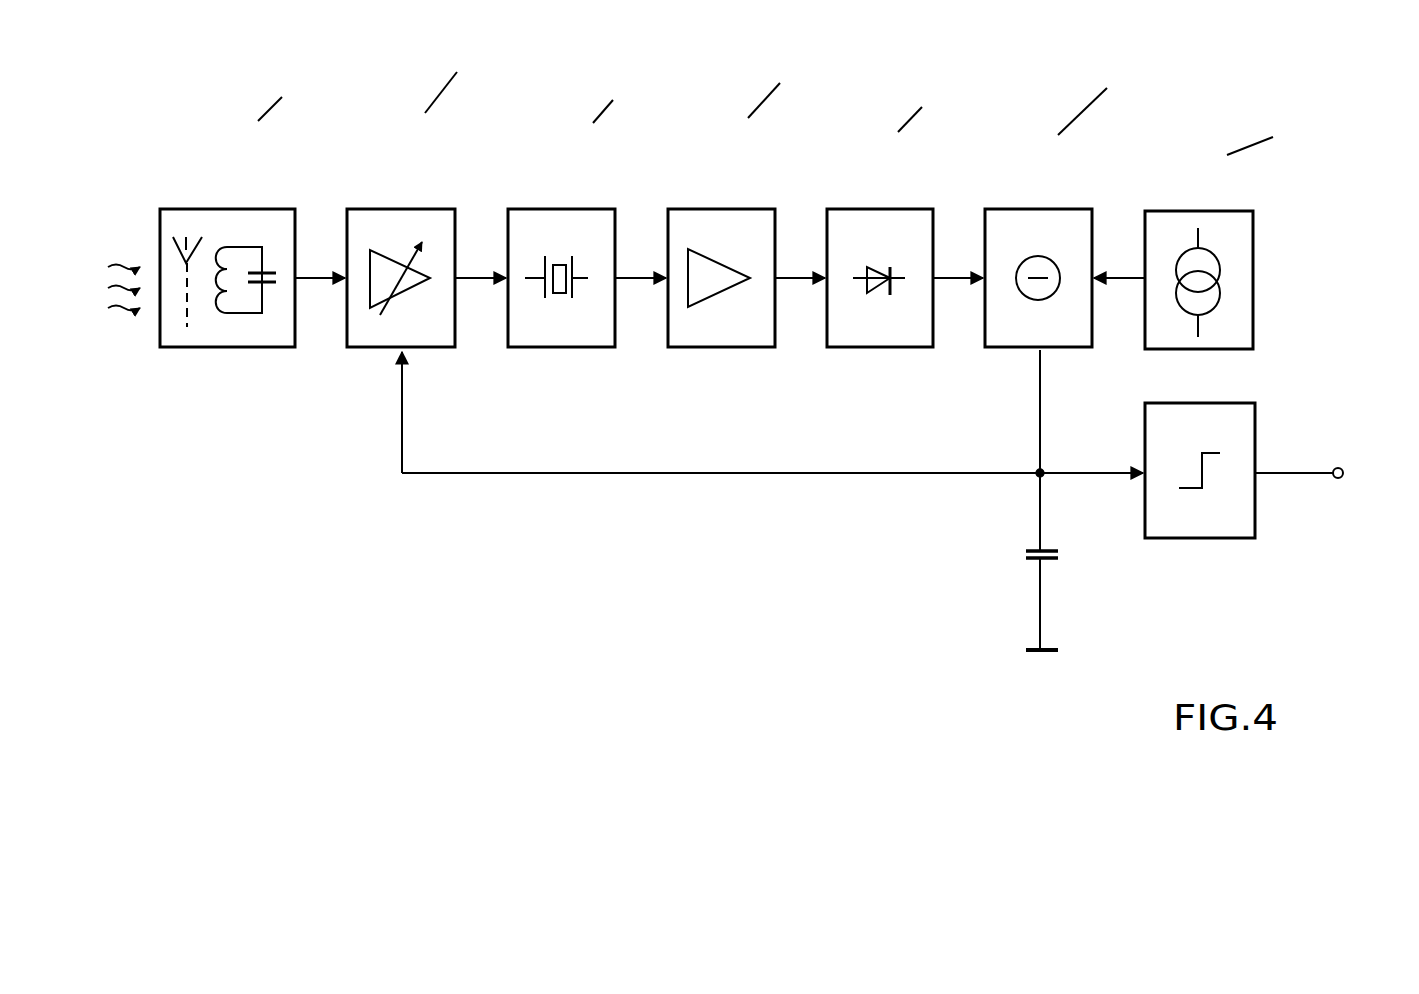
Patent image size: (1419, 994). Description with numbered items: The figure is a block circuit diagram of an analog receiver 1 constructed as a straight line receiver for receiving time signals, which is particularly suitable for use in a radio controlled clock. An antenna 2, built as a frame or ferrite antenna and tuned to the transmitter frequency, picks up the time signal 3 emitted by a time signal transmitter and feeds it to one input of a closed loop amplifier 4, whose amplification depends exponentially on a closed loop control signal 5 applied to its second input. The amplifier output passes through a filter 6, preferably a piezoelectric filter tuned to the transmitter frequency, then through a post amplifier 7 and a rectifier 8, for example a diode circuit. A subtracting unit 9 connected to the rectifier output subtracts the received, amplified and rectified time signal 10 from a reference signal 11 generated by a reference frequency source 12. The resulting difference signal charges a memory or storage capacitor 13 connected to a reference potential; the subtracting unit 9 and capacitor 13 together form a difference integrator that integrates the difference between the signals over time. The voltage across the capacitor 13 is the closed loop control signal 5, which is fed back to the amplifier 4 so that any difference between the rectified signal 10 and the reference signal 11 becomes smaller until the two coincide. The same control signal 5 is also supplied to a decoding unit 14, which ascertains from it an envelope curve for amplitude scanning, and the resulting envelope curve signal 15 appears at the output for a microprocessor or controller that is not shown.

The receiver 1 is at (426, 550).
The antenna 2 is at (214, 204).
The time signal 3 is at (117, 258).
The closed loop amplifier 4 is at (393, 204).
The closed loop control signal 5 is at (1033, 478).
The filter 6 is at (562, 207).
The post amplifier 7 is at (715, 207).
The rectifier 8 is at (870, 205).
The subtracting unit 9 is at (1030, 207).
The rectified time signal 10 is at (963, 284).
The reference signal 11 is at (1125, 284).
The reference frequency source 12 is at (1178, 209).
The storage capacitor 13 is at (1020, 558).
The decoding unit 14 is at (1190, 540).
The envelope curve signal 15 is at (1335, 482).